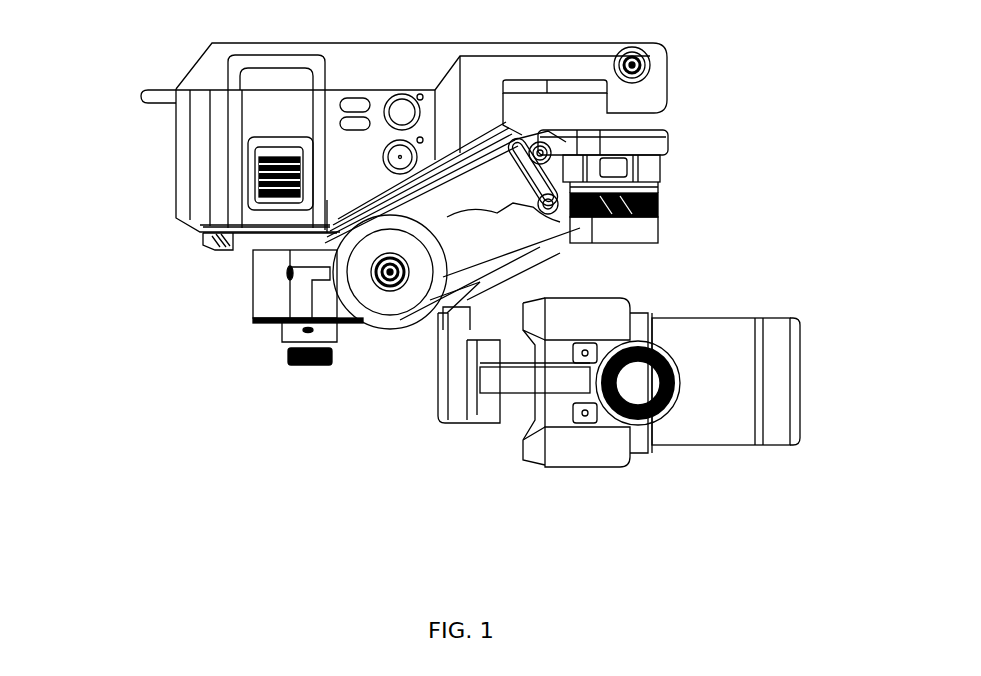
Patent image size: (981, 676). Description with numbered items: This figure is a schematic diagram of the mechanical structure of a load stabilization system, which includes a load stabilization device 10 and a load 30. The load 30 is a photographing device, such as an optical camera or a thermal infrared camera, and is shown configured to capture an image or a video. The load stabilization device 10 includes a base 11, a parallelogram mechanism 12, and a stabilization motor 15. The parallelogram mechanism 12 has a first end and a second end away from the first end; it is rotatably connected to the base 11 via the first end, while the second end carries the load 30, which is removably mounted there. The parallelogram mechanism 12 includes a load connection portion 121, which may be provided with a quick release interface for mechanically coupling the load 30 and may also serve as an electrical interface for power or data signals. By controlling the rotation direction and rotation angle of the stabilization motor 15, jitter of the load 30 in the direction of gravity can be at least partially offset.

The load stabilization device 10 is at (355, 185).
The base 11 is at (373, 78).
The parallelogram mechanism 12 is at (460, 218).
The stabilization motor 15 is at (380, 287).
The load connection portion 121 is at (647, 170).
The load 30 is at (692, 407).